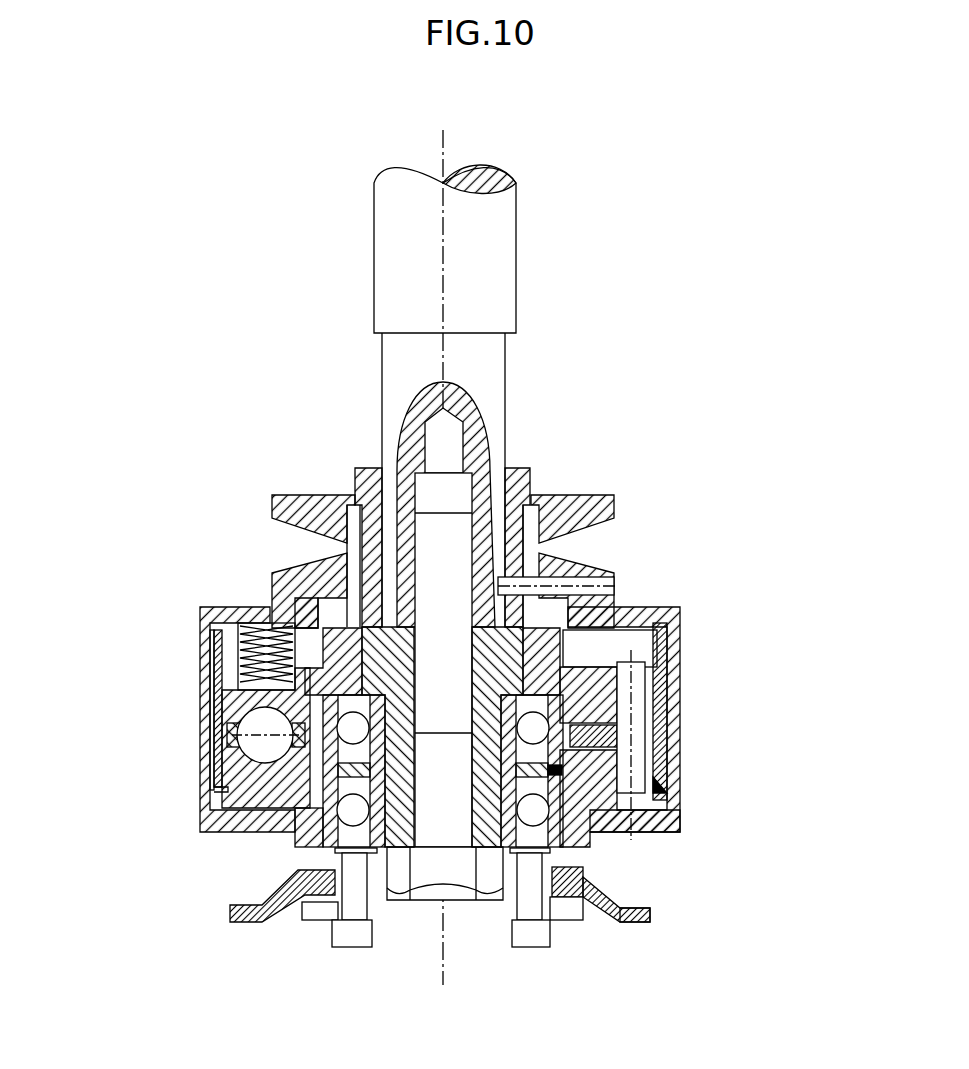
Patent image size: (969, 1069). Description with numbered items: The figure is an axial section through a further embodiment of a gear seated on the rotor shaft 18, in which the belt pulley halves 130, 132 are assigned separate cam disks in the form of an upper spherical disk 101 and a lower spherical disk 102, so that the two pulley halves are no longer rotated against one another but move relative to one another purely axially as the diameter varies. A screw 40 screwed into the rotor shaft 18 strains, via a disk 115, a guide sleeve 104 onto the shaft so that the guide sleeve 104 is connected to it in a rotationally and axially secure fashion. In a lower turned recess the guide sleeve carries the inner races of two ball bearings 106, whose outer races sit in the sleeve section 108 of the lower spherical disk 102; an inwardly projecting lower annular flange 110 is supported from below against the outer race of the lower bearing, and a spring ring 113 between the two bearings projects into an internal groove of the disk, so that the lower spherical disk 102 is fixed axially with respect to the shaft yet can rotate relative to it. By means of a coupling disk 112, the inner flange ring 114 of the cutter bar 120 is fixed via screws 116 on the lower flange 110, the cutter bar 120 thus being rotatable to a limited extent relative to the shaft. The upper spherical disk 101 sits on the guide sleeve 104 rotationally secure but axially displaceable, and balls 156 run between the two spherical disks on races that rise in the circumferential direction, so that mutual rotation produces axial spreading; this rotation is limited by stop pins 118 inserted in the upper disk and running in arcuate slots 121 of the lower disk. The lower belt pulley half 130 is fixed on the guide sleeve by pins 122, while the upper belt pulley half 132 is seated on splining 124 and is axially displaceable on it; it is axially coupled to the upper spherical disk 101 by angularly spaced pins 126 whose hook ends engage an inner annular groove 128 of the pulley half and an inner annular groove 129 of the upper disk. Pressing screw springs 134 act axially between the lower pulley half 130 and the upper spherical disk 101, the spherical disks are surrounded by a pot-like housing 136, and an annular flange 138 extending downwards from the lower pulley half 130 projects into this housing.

The rotor shaft 18 is at (500, 265).
The screw 40 is at (432, 827).
The upper spherical disk 101 is at (262, 710).
The lower spherical disk 102 is at (248, 792).
The guide sleeve 104 is at (352, 897).
The ball bearings 106 is at (262, 910).
The sleeve section 108 is at (580, 835).
The lower annular flange 110 is at (587, 900).
The coupling disk 112 is at (558, 917).
The spring ring 113 is at (558, 768).
The inner flange ring 114 is at (560, 880).
The disk 115 is at (473, 853).
The screws 116 is at (335, 920).
The stop pins 118 is at (637, 682).
The cutter bar 120 is at (640, 920).
The arcuate slots 121 is at (660, 780).
The pins 122 is at (613, 585).
The splining 124 is at (357, 490).
The pins 126 is at (355, 548).
The inner annular groove 128 is at (537, 508).
The inner annular groove 129 is at (537, 662).
The lower belt pulley half 130 is at (293, 580).
The upper belt pulley half 132 is at (293, 508).
The pressing screw springs 134 is at (283, 630).
The pot-like housing 136 is at (240, 704).
The annular flange 138 is at (213, 660).
The balls 156 is at (240, 742).